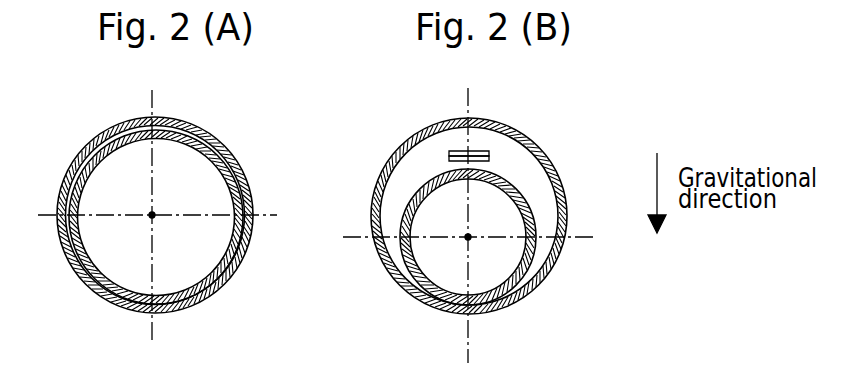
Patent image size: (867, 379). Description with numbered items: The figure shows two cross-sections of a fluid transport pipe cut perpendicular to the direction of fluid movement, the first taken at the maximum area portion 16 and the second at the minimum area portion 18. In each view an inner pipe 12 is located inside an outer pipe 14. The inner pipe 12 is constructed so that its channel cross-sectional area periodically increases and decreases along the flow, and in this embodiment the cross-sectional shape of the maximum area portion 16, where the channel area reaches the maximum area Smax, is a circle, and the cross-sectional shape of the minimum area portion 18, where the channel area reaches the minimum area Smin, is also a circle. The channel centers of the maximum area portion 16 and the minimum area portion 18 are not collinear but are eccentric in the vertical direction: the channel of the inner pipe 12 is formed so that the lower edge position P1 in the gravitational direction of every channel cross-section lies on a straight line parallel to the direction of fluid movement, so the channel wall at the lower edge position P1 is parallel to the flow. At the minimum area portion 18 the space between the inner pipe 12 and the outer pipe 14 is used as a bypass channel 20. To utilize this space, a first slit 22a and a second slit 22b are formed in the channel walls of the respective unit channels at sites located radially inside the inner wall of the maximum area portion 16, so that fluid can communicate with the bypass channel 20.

In FIG. 2A, the inner pipe 12 is at (200, 125).
In FIG. 2B, the inner pipe 12 is at (505, 172).
In FIG. 2A, the outer pipe 14 is at (237, 147).
In FIG. 2B, the outer pipe 14 is at (543, 147).
In FIG. 2A, the maximum area portion 16 is at (115, 175).
In FIG. 2B, the minimum area portion 18 is at (502, 215).
In FIG. 2B, the bypass channel 20 is at (403, 190).
In FIG. 2B, the first slit 22a is at (458, 150).
In FIG. 2B, the second slit 22b is at (469, 158).
In FIG. 2A, the lower edge position P1 is at (135, 308).
In FIG. 2B, the lower edge position P1 is at (452, 312).
In FIG. 2A, the maximum area Smax is at (208, 248).
In FIG. 2B, the minimum area Smin is at (492, 250).